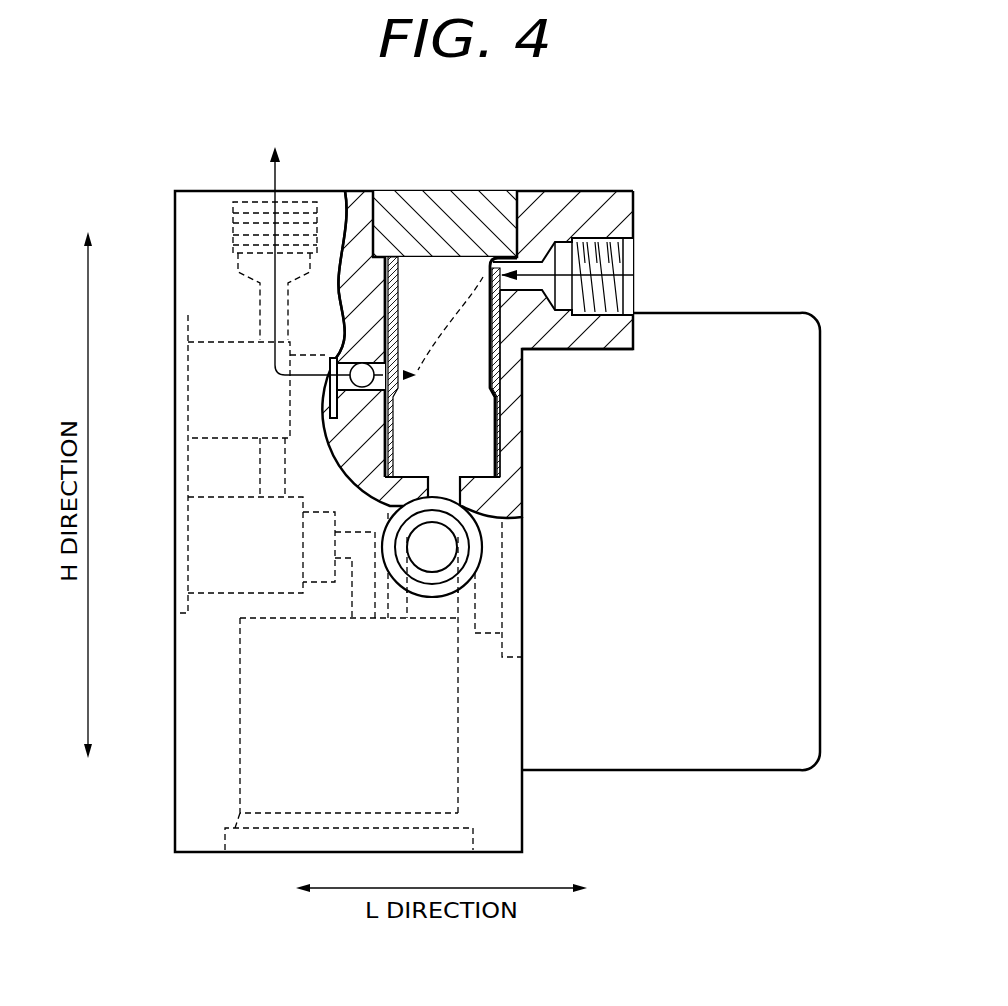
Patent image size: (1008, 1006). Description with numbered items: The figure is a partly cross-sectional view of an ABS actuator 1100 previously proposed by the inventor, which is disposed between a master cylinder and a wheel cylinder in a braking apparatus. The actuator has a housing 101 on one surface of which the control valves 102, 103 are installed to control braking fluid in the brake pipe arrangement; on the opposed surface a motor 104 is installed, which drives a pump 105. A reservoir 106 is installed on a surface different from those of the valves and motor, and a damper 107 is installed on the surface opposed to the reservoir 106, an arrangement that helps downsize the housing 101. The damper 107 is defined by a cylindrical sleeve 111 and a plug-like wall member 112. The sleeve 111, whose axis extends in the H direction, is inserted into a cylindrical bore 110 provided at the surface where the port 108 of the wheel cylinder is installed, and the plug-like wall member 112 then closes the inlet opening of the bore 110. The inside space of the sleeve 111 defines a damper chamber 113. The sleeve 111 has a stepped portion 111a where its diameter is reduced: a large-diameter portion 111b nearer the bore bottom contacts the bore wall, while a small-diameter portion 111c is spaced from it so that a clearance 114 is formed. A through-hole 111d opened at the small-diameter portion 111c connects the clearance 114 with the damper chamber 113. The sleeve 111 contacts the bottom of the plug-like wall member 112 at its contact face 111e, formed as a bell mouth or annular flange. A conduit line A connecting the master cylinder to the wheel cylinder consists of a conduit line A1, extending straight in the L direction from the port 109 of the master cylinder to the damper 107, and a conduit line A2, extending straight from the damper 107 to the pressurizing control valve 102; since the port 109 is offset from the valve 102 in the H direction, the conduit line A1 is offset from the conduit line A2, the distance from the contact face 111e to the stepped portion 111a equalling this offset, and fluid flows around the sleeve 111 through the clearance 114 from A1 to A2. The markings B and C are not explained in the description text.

The ABS actuator 1100 is at (160, 185).
The housing 101 is at (175, 686).
The pressurizing control valve 102 is at (217, 337).
The control valve 103 is at (220, 497).
The motor 104 is at (821, 505).
The pump 105 is at (481, 553).
The reservoir 106 is at (460, 797).
The damper 107 is at (506, 172).
The port of the wheel cylinder 108 is at (232, 214).
The port of the master cylinder 109 is at (629, 190).
The cylindrical bore 110 is at (343, 192).
The cylindrical sleeve 111 is at (517, 225).
The stepped portion 111a is at (502, 397).
The large-diameter portion 111b is at (490, 420).
The small-diameter portion 111c is at (397, 245).
The through-hole 111d is at (492, 284).
The contact face 111e is at (395, 256).
The plug-like wall member 112 is at (455, 215).
The damper chamber 113 is at (470, 443).
The clearance 114 is at (557, 343).
The conduit line A is at (362, 352).
The conduit line A1 is at (549, 240).
The conduit line A2 is at (323, 420).
The region B is at (250, 462).
The corner C is at (478, 487).